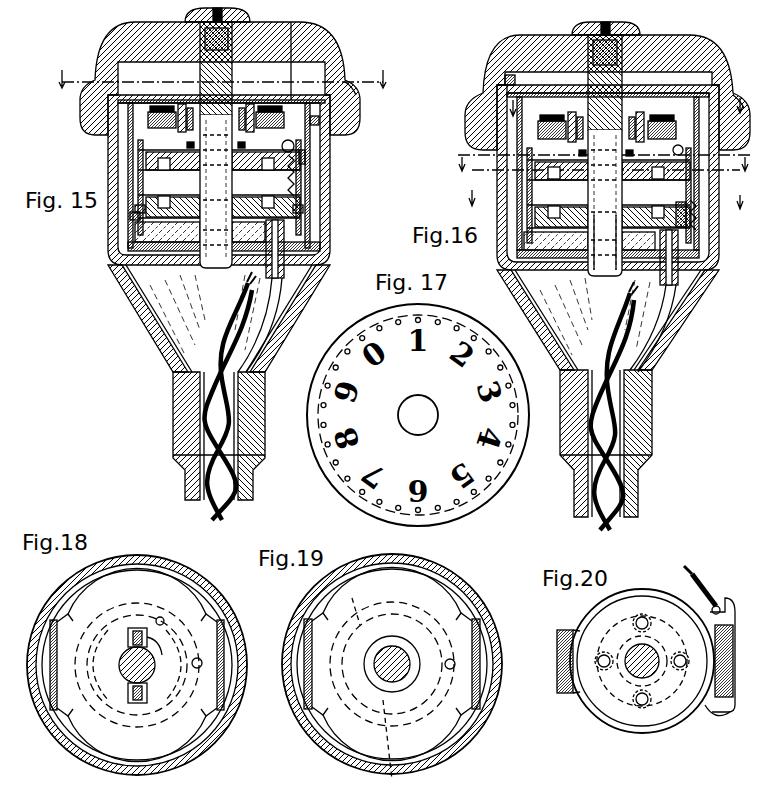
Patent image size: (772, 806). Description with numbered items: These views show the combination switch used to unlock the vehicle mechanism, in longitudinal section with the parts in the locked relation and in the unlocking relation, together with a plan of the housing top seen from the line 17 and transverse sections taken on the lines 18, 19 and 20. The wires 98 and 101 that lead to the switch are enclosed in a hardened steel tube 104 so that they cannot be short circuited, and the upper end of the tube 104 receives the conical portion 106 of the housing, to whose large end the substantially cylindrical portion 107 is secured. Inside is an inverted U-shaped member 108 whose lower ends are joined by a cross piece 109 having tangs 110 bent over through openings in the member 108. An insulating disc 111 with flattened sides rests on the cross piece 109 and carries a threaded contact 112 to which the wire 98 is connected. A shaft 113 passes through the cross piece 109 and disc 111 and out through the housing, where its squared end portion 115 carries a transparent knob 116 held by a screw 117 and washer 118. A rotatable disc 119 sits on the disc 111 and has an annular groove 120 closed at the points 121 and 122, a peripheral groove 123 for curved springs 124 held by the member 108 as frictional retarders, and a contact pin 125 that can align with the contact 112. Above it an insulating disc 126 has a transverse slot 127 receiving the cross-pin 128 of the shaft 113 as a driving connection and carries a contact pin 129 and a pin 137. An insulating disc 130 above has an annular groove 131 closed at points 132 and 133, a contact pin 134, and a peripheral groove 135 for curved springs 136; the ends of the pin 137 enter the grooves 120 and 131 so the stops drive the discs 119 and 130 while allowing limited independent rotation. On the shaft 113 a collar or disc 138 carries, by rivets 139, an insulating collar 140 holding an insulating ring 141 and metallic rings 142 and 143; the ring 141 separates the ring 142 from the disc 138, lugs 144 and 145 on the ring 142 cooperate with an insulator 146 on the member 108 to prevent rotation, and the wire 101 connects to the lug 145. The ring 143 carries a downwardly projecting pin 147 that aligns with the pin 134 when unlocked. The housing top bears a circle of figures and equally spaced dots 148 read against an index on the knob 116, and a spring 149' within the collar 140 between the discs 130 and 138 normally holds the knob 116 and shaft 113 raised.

In FIG. 15, the section line 17- 17 is at (223, 77).
In FIG. 16, the section line 18- 18 is at (609, 183).
In FIG. 16, the section line 19- 19 is at (602, 158).
In FIG. 16, the section line 20- 20 is at (510, 98).
In FIG. 15, the wire 98 is at (278, 300).
In FIG. 16, the wire 98 is at (665, 300).
In FIG. 15, the wire 101 is at (240, 300).
In FIG. 16, the wire 101 is at (620, 301).
In FIG. 20, the wire 101 is at (702, 578).
In FIG. 15, the hardened steel tube 104 is at (175, 460).
In FIG. 16, the hardened steel tube 104 is at (628, 490).
In FIG. 15, the conical portion 106 is at (160, 320).
In FIG. 16, the conical portion 106 is at (660, 340).
In FIG. 15, the cylindrical portion 107 is at (300, 160).
In FIG. 16, the cylindrical portion 107 is at (563, 112).
In FIG. 15, the inverted U-shaped member 108 is at (133, 141).
In FIG. 16, the inverted U-shaped member 108 is at (608, 177).
In FIG. 18, the inverted U-shaped member 108 is at (224, 692).
In FIG. 19, the inverted U-shaped member 108 is at (304, 632).
In FIG. 20, the inverted U-shaped member 108 is at (728, 660).
In FIG. 15, the cross piece 109 is at (118, 275).
In FIG. 16, the cross piece 109 is at (530, 280).
In FIG. 15, the tangs 110 is at (135, 251).
In FIG. 16, the tangs 110 is at (515, 262).
In FIG. 15, the insulating disc 111 is at (150, 226).
In FIG. 16, the insulating disc 111 is at (520, 236).
In FIG. 15, the contact 112 is at (285, 265).
In FIG. 16, the contact 112 is at (680, 275).
In FIG. 15, the shaft 113 is at (205, 268).
In FIG. 16, the shaft 113 is at (618, 266).
In FIG. 18, the shaft 113 is at (127, 665).
In FIG. 15, the squared end portion 115 is at (243, 38).
In FIG. 16, the squared end portion 115 is at (645, 38).
In FIG. 15, the knob 116 is at (313, 42).
In FIG. 16, the knob 116 is at (505, 55).
In FIG. 15, the screw 117 is at (198, 12).
In FIG. 16, the screw 117 is at (590, 24).
In FIG. 16, the washer 118 is at (577, 30).
In FIG. 16, the rotatable disc 119 is at (592, 216).
In FIG. 15, the annular groove 120 is at (138, 196).
In FIG. 16, the annular groove 120 is at (527, 186).
In FIG. 18, the annular groove 120 is at (150, 718).
In FIG. 18, the closed point 121 is at (80, 624).
In FIG. 18, the closed point 122 is at (85, 736).
In FIG. 15, the peripheral groove 123 is at (303, 190).
In FIG. 15, the curved springs 124 is at (304, 208).
In FIG. 18, the curved springs 124 is at (201, 618).
In FIG. 16, the contact pin 125 is at (698, 196).
In FIG. 15, the insulating disc 126 is at (306, 181).
In FIG. 16, the insulating disc 126 is at (530, 200).
In FIG. 18, the insulating disc 126 is at (214, 752).
In FIG. 18, the transverse slot 127 is at (167, 650).
In FIG. 15, the cross-pin 128 is at (206, 196).
In FIG. 16, the cross-pin 128 is at (614, 201).
In FIG. 18, the cross-pin 128 is at (126, 665).
In FIG. 16, the contact pin 129 is at (700, 180).
In FIG. 18, the contact pin 129 is at (203, 661).
In FIG. 16, the insulating disc 130 is at (517, 140).
In FIG. 19, the insulating disc 130 is at (410, 603).
In FIG. 15, the annular groove 131 is at (150, 192).
In FIG. 16, the annular groove 131 is at (606, 185).
In FIG. 19, the annular groove 131 is at (354, 601).
In FIG. 19, the closed point 132 is at (404, 618).
In FIG. 19, the closed point 133 is at (404, 748).
In FIG. 16, the contact pin 134 is at (700, 140).
In FIG. 19, the contact pin 134 is at (456, 661).
In FIG. 15, the peripheral groove 135 is at (295, 146).
In FIG. 15, the curved springs 136 is at (306, 158).
In FIG. 19, the curved springs 136 is at (325, 618).
In FIG. 15, the pin 137 is at (133, 212).
In FIG. 18, the pin 137 is at (156, 620).
In FIG. 15, the collar or disc 138 is at (170, 104).
In FIG. 16, the collar or disc 138 is at (645, 112).
In FIG. 16, the rivets 139 is at (510, 80).
In FIG. 15, the insulating collar 140 is at (128, 140).
In FIG. 16, the insulating collar 140 is at (540, 96).
In FIG. 15, the insulating ring 141 is at (55, 90).
In FIG. 15, the metallic ring 142 is at (148, 110).
In FIG. 20, the metallic ring 142 is at (676, 720).
In FIG. 15, the metallic ring 143 is at (148, 124).
In FIG. 20, the lug 144 is at (718, 700).
In FIG. 15, the lug 145 is at (320, 121).
In FIG. 20, the lug 145 is at (724, 611).
In FIG. 15, the insulator 146 is at (347, 96).
In FIG. 16, the insulator 146 is at (722, 86).
In FIG. 20, the insulator 146 is at (733, 646).
In FIG. 15, the pin 147 is at (246, 145).
In FIG. 16, the pin 147 is at (688, 128).
In FIG. 17, the dots 148 is at (350, 469).
In FIG. 15, the spring 149' is at (176, 68).
In FIG. 16, the spring 149' is at (656, 71).